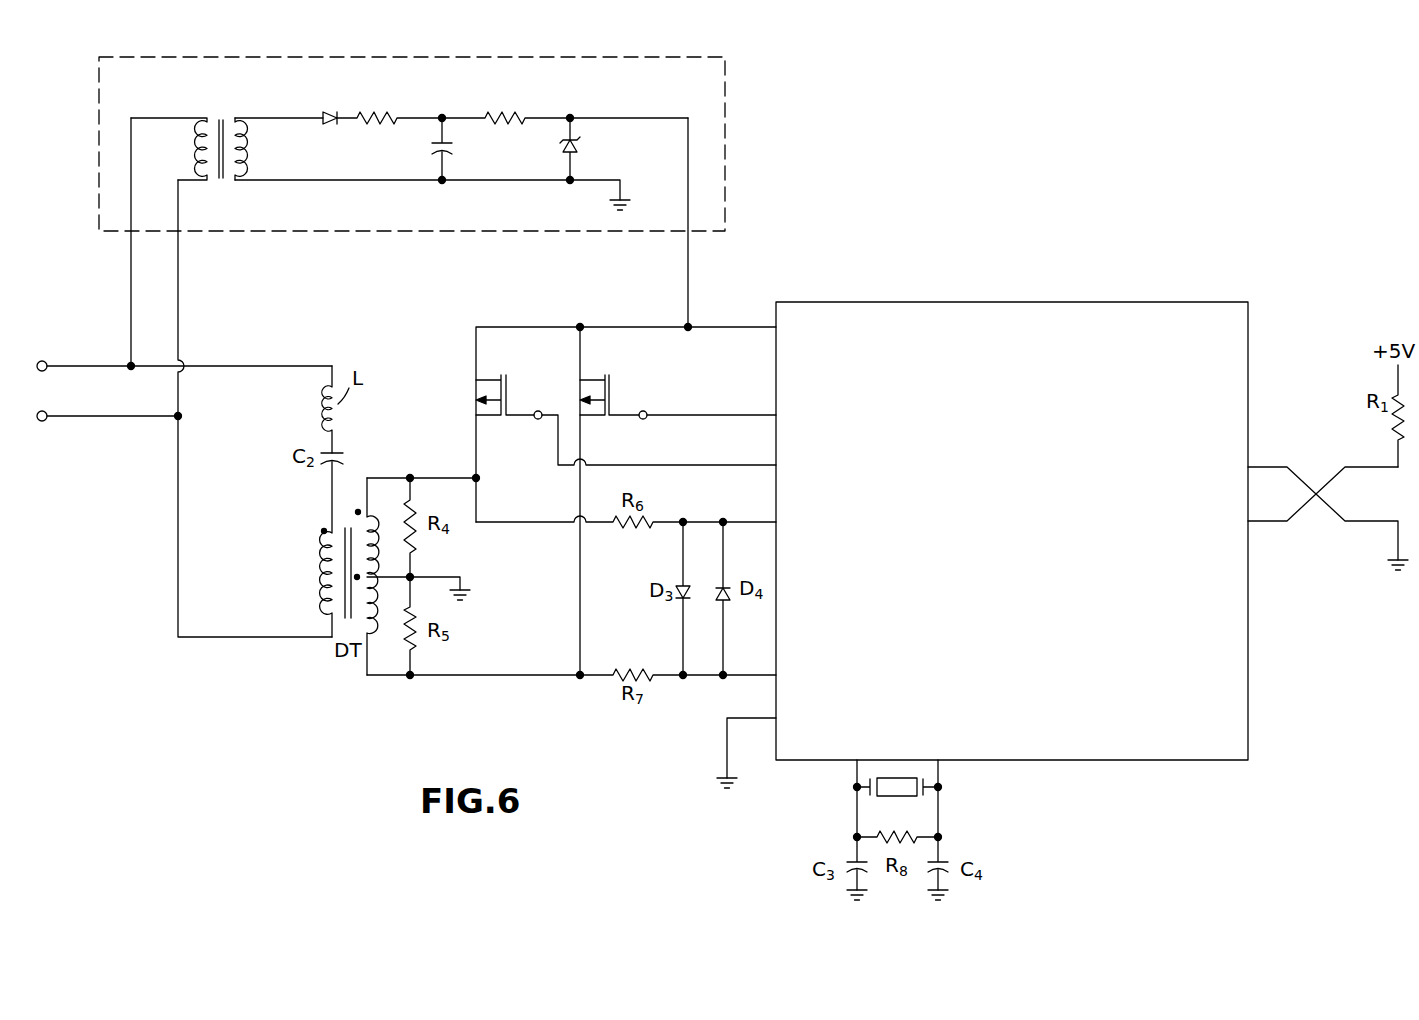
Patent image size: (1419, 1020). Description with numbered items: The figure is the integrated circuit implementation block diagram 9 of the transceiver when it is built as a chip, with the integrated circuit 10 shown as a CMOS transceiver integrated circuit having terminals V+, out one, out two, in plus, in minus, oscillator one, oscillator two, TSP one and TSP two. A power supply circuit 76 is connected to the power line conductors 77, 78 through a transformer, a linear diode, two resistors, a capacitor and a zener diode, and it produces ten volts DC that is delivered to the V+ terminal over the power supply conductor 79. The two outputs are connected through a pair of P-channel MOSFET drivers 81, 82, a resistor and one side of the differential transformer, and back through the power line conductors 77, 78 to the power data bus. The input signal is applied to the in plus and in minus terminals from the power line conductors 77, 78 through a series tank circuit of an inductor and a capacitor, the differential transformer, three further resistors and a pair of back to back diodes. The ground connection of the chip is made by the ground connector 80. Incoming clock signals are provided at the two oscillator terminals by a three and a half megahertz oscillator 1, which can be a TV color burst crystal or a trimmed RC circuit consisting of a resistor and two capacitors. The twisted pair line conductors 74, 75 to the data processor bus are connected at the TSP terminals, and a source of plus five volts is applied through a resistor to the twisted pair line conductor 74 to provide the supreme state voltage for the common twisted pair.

The oscillator 1 is at (893, 797).
The integrated circuit implementation block diagram 9 is at (918, 268).
The integrated circuit 10 is at (985, 518).
The twisted pair line conductor 74 is at (1363, 466).
The twisted pair line conductor 75 is at (1358, 530).
The power supply circuit 76 is at (725, 85).
The power line conductor 77 is at (88, 362).
The power line conductor 78 is at (86, 420).
The power supply conductor 79 is at (689, 274).
The ground connector 80 is at (727, 740).
The P-channel MOSFET driver 81 is at (626, 409).
The P-channel MOSFET driver 82 is at (678, 386).